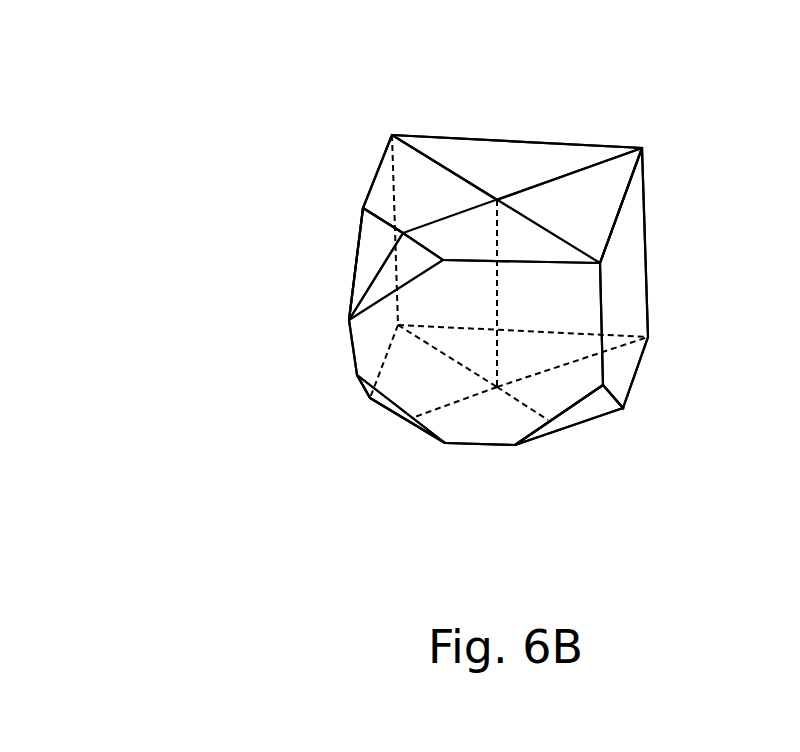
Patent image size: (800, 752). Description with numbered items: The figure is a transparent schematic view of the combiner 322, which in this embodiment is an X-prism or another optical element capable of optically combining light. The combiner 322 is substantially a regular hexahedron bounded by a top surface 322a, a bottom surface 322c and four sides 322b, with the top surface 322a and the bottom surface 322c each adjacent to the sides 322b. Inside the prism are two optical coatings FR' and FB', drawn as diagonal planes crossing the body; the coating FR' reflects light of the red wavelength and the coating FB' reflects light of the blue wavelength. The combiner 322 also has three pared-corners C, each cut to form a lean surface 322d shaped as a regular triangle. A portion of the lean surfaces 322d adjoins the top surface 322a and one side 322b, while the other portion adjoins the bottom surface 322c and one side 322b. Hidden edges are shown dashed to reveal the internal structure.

The combiner 322 is at (376, 129).
The top surface 322a is at (515, 153).
The side 322b is at (627, 260).
The bottom surface 322c is at (488, 427).
The lean surface 322d is at (367, 263).
The pared-corner C is at (336, 229).
The optical coating FR' is at (444, 133).
The optical coating FB' is at (569, 127).